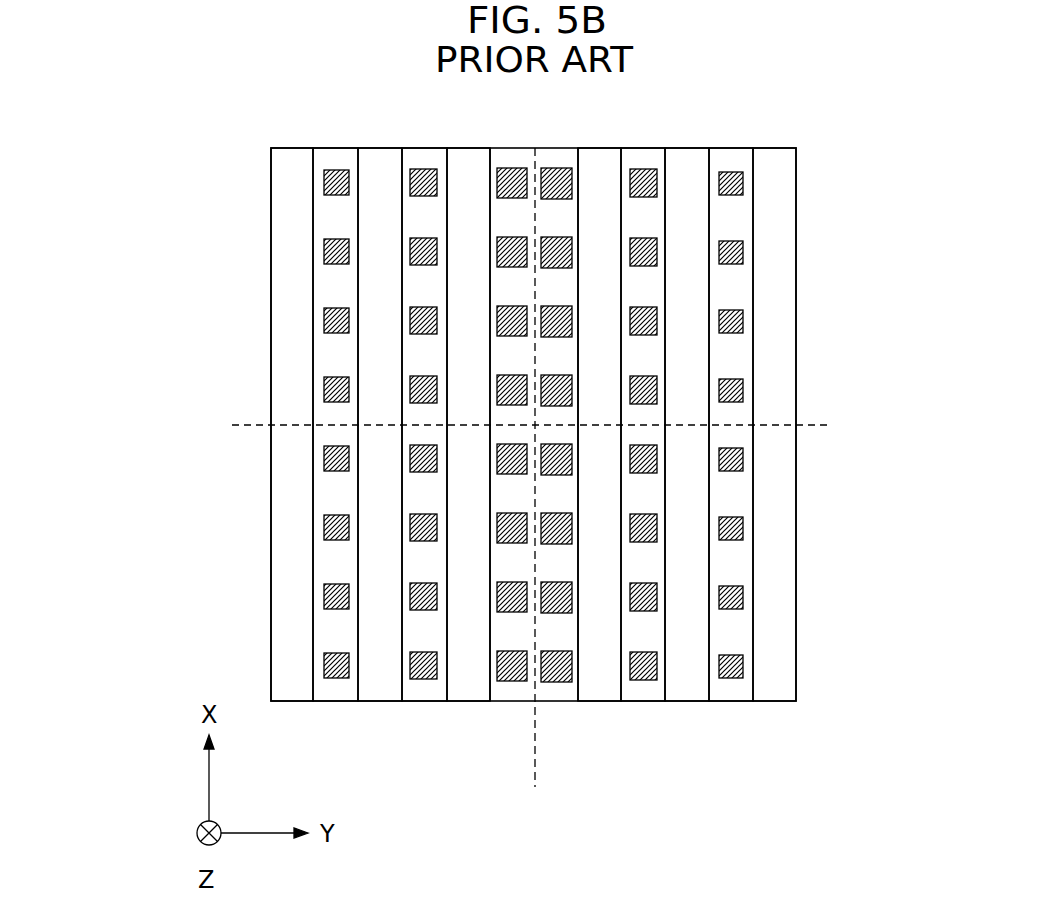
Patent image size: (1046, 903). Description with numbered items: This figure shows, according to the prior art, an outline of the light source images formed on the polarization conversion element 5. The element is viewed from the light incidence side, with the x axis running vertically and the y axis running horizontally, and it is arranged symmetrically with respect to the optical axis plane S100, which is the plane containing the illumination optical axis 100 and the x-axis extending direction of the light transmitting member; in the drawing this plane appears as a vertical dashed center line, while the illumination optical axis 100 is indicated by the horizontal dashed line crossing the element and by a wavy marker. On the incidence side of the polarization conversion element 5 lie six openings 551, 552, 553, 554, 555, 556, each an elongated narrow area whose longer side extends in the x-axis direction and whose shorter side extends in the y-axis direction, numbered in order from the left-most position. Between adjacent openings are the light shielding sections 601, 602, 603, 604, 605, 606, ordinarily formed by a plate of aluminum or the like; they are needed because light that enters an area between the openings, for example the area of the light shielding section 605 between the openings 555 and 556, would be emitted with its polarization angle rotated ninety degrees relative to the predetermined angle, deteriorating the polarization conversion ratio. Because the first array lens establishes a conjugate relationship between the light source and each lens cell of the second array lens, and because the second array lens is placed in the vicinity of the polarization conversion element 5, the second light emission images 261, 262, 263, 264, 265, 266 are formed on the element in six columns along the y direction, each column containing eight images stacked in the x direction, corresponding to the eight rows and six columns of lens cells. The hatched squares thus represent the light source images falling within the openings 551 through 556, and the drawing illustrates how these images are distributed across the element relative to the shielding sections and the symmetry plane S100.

The polarization conversion element 5 is at (271, 247).
The second light emission image 261 is at (328, 701).
The second light emission image 262 is at (418, 701).
The second light emission image 263 is at (508, 701).
The second light emission image 264 is at (555, 701).
The second light emission image 265 is at (642, 701).
The second light emission image 266 is at (730, 701).
The light shielding section 601 is at (285, 701).
The light shielding section 602 is at (377, 701).
The light shielding section 603 is at (462, 701).
The light shielding section 604 is at (598, 701).
The light shielding section 605 is at (687, 701).
The light shielding section 606 is at (775, 701).
The opening 551 is at (336, 170).
The opening 552 is at (423, 169).
The opening 553 is at (512, 168).
The opening 554 is at (560, 168).
The opening 555 is at (644, 169).
The opening 556 is at (731, 172).
The illumination optical axis 100 is at (533, 426).
The optical axis plane S100 is at (536, 483).